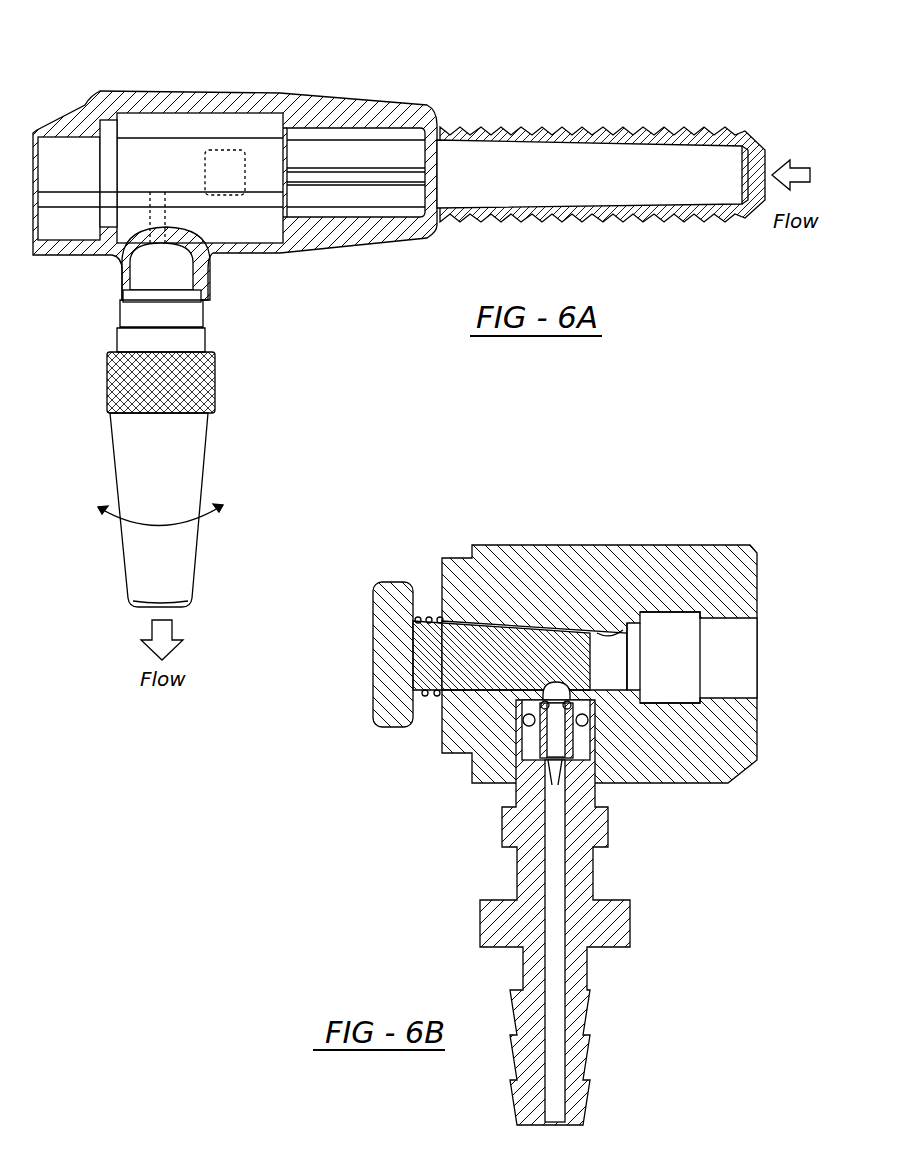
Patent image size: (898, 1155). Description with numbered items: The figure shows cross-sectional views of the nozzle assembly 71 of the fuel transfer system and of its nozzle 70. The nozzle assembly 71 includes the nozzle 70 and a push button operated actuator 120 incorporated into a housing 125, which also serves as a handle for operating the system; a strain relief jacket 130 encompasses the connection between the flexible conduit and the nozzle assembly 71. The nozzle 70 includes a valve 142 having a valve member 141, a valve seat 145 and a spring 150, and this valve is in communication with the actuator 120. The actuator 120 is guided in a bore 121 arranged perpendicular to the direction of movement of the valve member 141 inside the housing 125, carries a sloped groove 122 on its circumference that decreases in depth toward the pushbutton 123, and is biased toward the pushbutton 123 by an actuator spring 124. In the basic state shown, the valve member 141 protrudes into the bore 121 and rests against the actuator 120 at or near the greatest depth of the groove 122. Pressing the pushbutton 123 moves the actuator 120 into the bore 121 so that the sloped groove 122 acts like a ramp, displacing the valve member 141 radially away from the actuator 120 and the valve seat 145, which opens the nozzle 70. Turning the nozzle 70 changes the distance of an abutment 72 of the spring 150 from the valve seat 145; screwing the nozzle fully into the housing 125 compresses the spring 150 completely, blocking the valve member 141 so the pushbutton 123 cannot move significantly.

In FIG. 6A, the nozzle 70 is at (167, 563).
In FIG. 6A, the nozzle assembly 71 is at (218, 479).
In FIG. 6B, the abutment 72 is at (553, 752).
In FIG. 6A, the actuator 120 is at (160, 172).
In FIG. 6B, the actuator 120 is at (555, 647).
In FIG. 6B, the bore 121 is at (607, 628).
In FIG. 6B, the sloped groove 122 is at (538, 684).
In FIG. 6B, the pushbutton 123 is at (373, 637).
In FIG. 6B, the actuator spring 124 is at (429, 616).
In FIG. 6A, the housing 125 is at (363, 100).
In FIG. 6A, the strain relief jacket 130 is at (630, 130).
In FIG. 6B, the valve member 141 is at (543, 722).
In FIG. 6B, the valve 142 is at (600, 672).
In FIG. 6B, the valve seat 145 is at (588, 704).
In FIG. 6B, the spring 150 is at (553, 780).